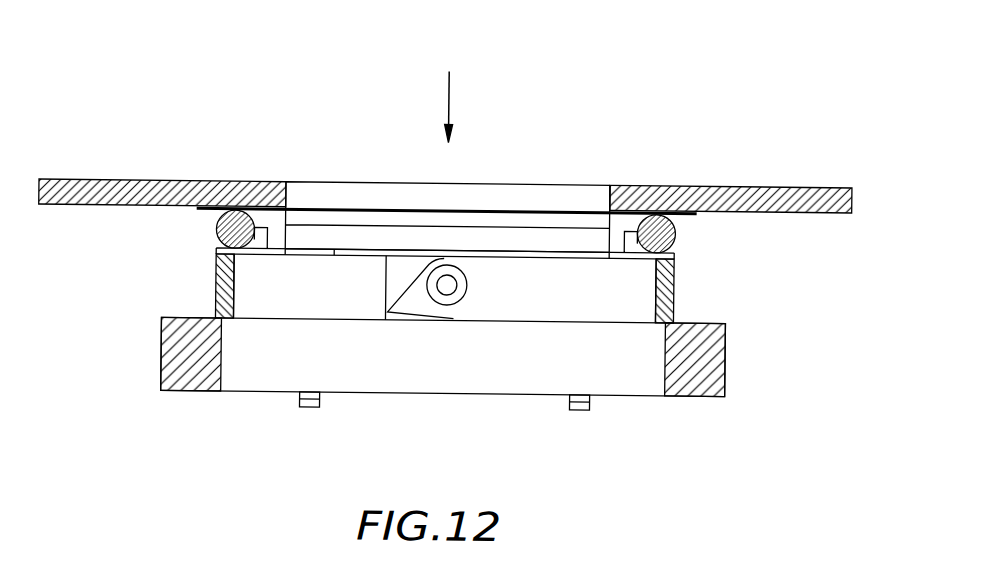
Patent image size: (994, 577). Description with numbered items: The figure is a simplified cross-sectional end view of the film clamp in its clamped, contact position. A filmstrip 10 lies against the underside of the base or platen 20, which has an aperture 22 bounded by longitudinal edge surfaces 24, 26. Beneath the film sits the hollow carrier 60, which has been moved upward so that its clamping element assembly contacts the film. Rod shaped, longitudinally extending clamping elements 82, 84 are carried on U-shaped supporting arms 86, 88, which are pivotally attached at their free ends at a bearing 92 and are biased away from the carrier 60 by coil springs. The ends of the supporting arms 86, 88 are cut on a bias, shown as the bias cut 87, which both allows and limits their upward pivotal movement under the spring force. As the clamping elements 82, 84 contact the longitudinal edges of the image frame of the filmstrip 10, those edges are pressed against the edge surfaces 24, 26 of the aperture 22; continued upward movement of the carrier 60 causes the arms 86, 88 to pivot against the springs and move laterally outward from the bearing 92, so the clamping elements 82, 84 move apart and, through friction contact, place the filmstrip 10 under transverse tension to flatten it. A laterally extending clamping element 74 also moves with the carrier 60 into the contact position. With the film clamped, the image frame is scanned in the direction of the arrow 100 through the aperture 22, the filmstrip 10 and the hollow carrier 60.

The filmstrip 10 is at (697, 206).
The platen 20 is at (743, 175).
The aperture 22 is at (557, 177).
The longitudinal edge surface 24 is at (662, 206).
The longitudinal edge surface 26 is at (225, 178).
The carrier 60 is at (723, 360).
The laterally extending clamping element 74 is at (310, 214).
The longitudinally extending clamping element 82 is at (677, 230).
The longitudinally extending clamping element 84 is at (220, 230).
The supporting arm 86 is at (675, 275).
The bias cut 87 is at (422, 314).
The supporting arm 88 is at (217, 278).
The bearing 92 is at (448, 281).
The arrow 100 is at (438, 73).